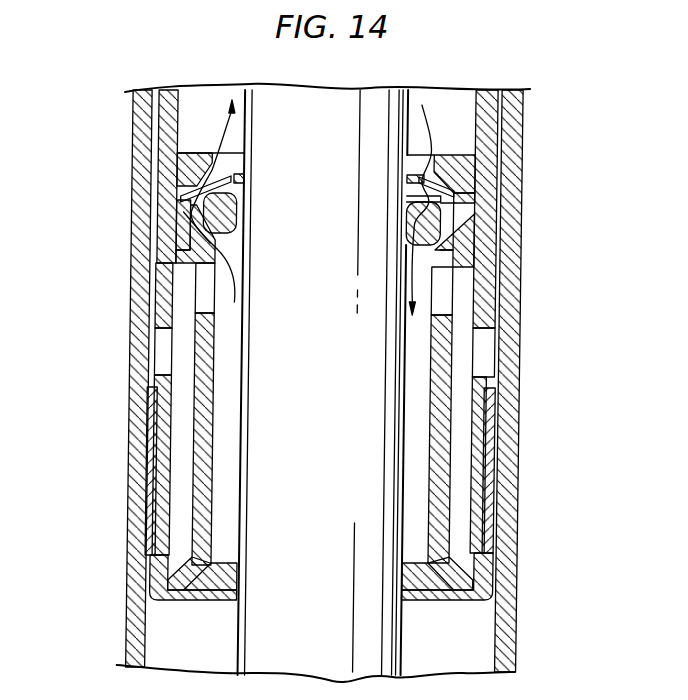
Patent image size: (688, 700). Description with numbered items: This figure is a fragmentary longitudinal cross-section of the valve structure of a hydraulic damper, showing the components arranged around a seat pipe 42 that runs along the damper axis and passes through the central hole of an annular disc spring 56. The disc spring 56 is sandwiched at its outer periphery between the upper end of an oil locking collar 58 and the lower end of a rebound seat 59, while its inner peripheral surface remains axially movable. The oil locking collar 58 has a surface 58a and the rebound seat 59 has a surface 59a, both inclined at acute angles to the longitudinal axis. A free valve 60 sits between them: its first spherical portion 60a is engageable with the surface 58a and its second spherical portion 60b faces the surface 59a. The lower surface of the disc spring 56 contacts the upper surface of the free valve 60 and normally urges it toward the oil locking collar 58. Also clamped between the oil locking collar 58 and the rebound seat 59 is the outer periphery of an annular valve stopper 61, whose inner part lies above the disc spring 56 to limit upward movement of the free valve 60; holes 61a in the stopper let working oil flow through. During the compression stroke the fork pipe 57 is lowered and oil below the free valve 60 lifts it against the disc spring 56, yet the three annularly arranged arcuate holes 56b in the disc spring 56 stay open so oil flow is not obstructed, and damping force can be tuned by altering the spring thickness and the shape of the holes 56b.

The seat pipe 42 is at (261, 431).
The annular disc spring 56 is at (466, 203).
The arcuate holes 56b is at (177, 213).
The fork pipe 57 is at (484, 410).
The oil locking collar 58 is at (447, 461).
The surface of oil locking collar 58a is at (195, 222).
The rebound seat 59 is at (466, 170).
The surface of rebound seat 59a is at (200, 167).
The free valve 60 is at (452, 227).
The first spherical portion 60a is at (410, 237).
The second spherical portion 60b is at (412, 213).
The annular valve stopper 61 is at (225, 182).
The holes of valve stopper 61a is at (193, 185).